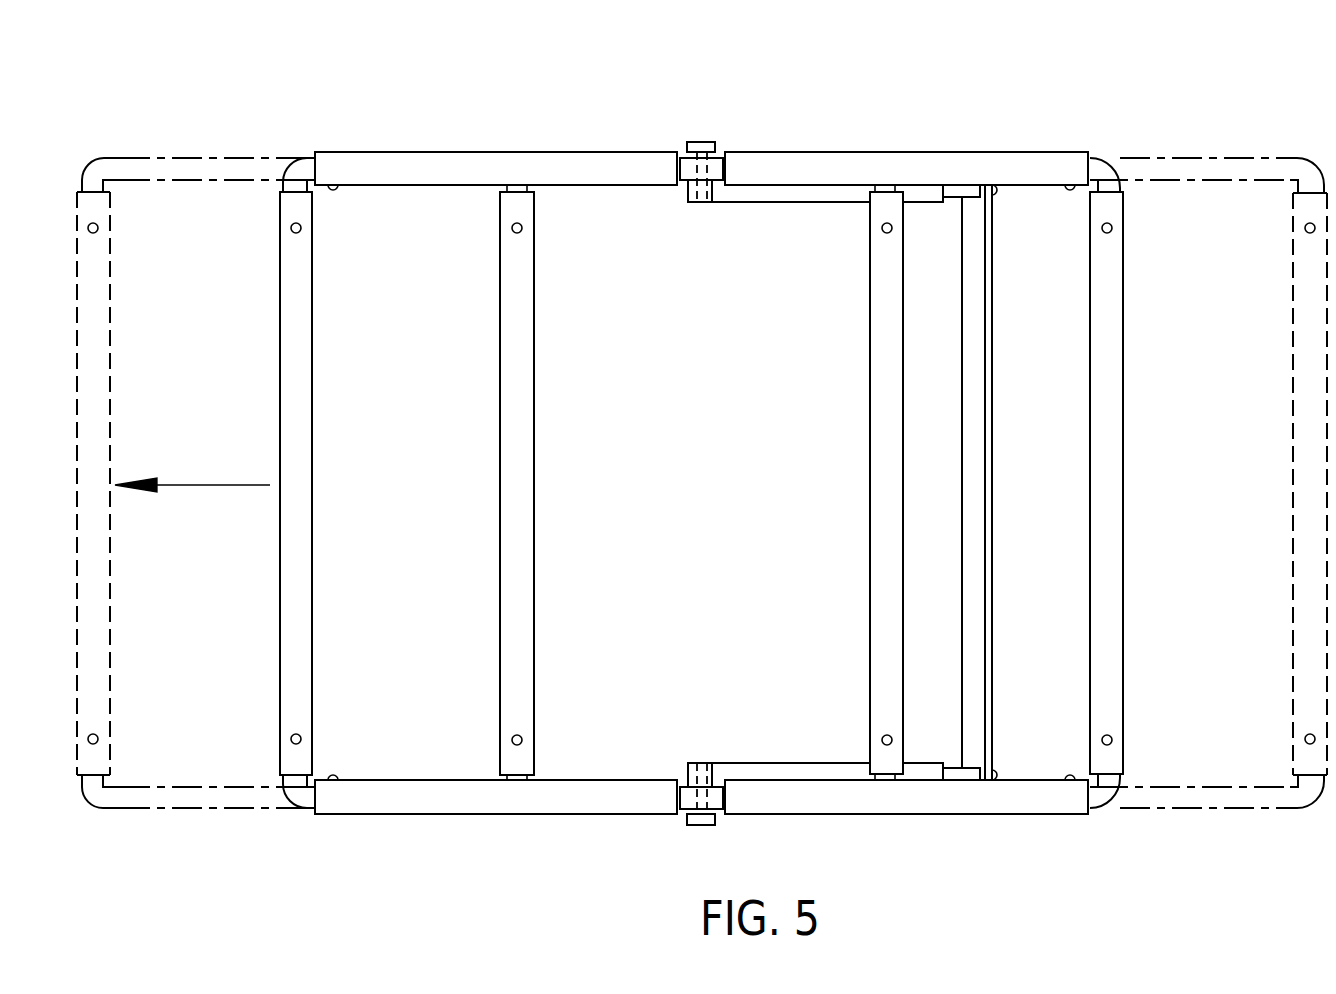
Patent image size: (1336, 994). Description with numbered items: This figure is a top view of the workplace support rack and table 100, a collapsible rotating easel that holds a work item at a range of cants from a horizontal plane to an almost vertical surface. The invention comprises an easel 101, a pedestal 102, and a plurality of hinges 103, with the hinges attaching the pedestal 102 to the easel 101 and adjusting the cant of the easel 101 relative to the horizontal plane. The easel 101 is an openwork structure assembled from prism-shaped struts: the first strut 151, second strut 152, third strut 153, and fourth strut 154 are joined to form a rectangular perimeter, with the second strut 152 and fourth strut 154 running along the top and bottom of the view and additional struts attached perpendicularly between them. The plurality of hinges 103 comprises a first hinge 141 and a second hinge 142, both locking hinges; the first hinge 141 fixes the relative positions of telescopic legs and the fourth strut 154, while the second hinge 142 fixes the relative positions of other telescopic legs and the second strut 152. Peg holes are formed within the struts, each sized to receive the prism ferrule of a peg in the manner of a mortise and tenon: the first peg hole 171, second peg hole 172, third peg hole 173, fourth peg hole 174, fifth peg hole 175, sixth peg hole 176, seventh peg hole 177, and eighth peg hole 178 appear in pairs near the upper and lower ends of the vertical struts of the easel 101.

The workplace support rack and table 100 is at (172, 113).
The easel 101 is at (1126, 197).
The pedestal 102 is at (990, 478).
The plurality of hinges 103 is at (699, 142).
The first hinge 141 is at (700, 763).
The second hinge 142 is at (700, 203).
The first strut 151 is at (280, 385).
The second strut 152 is at (553, 152).
The third strut 153 is at (1123, 505).
The fourth strut 154 is at (892, 816).
The first peg hole 171 is at (301, 739).
The second peg hole 172 is at (301, 228).
The third peg hole 173 is at (522, 739).
The fourth peg hole 174 is at (522, 228).
The fifth peg hole 175 is at (882, 740).
The sixth peg hole 176 is at (882, 228).
The seventh peg hole 177 is at (1112, 740).
The eighth peg hole 178 is at (1112, 228).